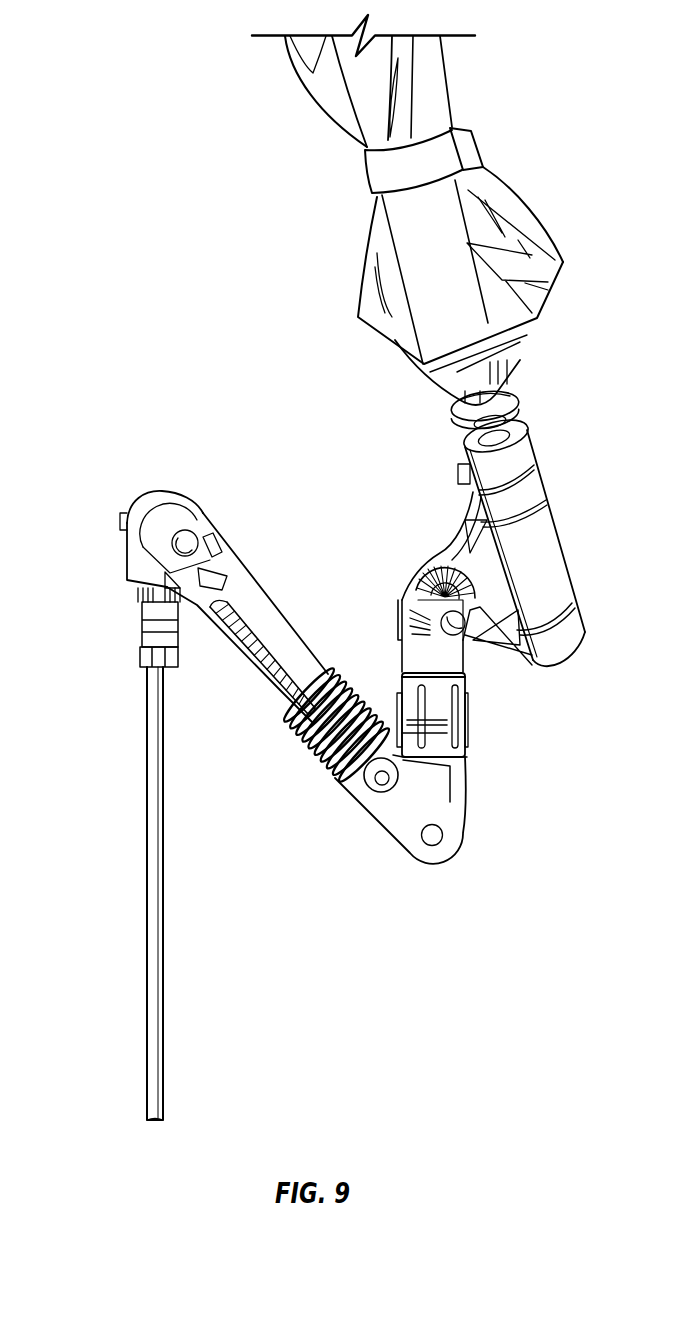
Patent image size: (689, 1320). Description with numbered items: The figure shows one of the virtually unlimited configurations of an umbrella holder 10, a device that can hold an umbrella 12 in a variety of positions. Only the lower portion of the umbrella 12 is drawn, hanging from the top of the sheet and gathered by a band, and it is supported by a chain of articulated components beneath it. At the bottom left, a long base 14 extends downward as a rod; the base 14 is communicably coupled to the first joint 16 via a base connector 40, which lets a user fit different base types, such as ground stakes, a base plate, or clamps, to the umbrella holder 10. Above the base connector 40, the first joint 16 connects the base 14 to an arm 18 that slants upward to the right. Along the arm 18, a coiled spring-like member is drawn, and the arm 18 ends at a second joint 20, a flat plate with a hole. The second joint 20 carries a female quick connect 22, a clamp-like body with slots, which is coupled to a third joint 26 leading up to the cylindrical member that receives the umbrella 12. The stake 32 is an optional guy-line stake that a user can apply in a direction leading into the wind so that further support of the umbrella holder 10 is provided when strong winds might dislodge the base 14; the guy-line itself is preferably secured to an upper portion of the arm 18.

The umbrella holder 10 is at (106, 323).
The umbrella 12 is at (517, 203).
The base 14 is at (191, 955).
The first joint 16 is at (107, 570).
The arm 18 is at (255, 603).
The second joint 20 is at (490, 848).
The female quick connect 22 is at (458, 702).
The third joint 26 is at (425, 543).
The stake 32 is at (265, 687).
The base connector 40 is at (128, 653).